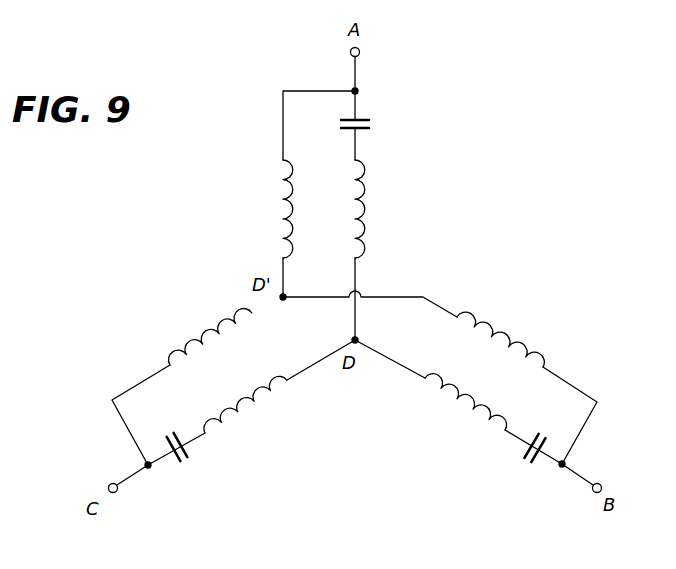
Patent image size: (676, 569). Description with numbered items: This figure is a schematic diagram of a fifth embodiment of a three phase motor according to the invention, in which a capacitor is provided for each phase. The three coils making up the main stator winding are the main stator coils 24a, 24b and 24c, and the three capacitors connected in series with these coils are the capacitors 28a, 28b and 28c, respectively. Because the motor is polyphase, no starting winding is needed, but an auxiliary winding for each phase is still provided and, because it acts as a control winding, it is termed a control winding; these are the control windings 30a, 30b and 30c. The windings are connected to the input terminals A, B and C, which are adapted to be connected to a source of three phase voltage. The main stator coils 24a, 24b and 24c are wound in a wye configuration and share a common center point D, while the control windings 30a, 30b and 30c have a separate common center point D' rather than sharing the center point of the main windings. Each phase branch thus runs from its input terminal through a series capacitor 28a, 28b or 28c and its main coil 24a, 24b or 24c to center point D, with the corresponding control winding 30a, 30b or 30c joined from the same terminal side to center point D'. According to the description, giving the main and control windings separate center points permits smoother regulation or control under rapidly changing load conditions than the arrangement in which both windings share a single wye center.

The main stator coil 24a is at (369, 206).
The main stator coil 24b is at (467, 408).
The main stator coil 24c is at (252, 418).
The capacitor 28a is at (372, 126).
The capacitor 28b is at (527, 468).
The capacitor 28c is at (182, 465).
The control winding 30a is at (284, 207).
The control winding 30b is at (527, 345).
The control winding 30c is at (217, 342).